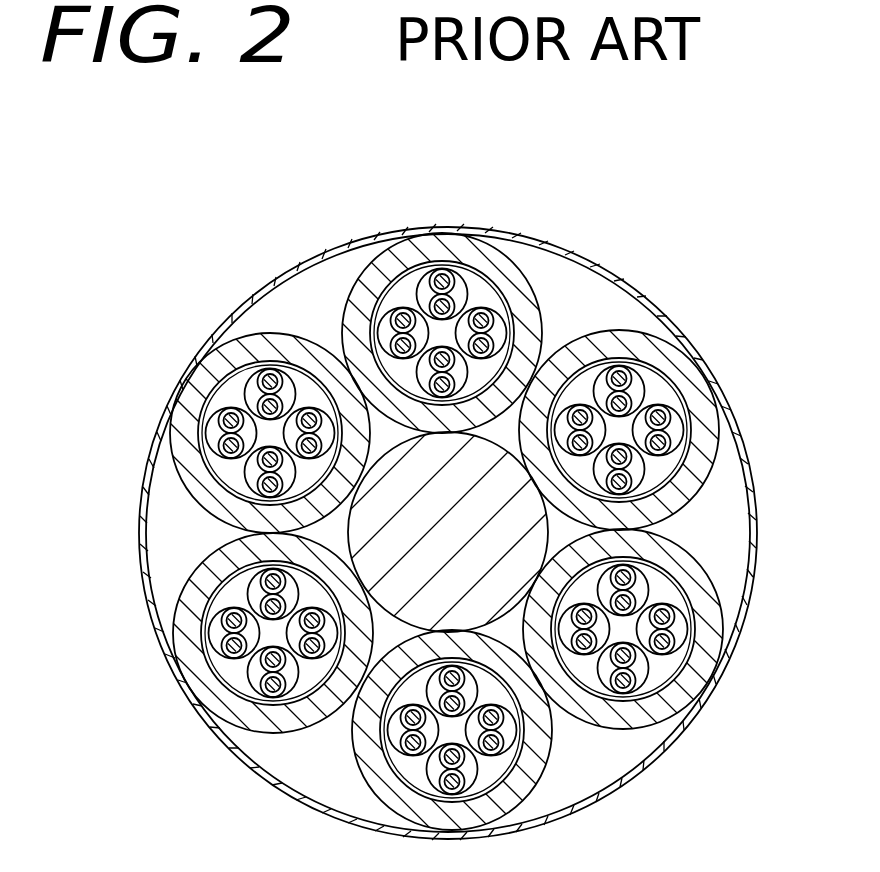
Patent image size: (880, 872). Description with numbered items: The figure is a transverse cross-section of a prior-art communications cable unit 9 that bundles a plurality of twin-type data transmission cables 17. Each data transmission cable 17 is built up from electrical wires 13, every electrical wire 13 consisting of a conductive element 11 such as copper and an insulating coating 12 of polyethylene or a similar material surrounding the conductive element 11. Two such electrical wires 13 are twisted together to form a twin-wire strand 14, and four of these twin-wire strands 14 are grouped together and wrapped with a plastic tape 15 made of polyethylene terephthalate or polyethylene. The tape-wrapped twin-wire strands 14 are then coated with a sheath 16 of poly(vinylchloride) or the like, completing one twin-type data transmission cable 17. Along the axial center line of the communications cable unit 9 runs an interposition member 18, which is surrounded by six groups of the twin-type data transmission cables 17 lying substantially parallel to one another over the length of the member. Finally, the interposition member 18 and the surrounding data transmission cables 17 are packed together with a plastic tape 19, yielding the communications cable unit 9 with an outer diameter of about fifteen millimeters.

The communications cable unit 9 is at (457, 487).
The conductive element 11 is at (458, 268).
The insulating coating 12 is at (477, 297).
The electrical wire 13 is at (415, 243).
The twin-wire strand 14 is at (513, 318).
The plastic tape 15 is at (343, 330).
The sheath 16 is at (445, 245).
The twin-type data transmission cable 17 is at (330, 340).
The interposition member 18 is at (545, 543).
The plastic tape 19 is at (600, 793).